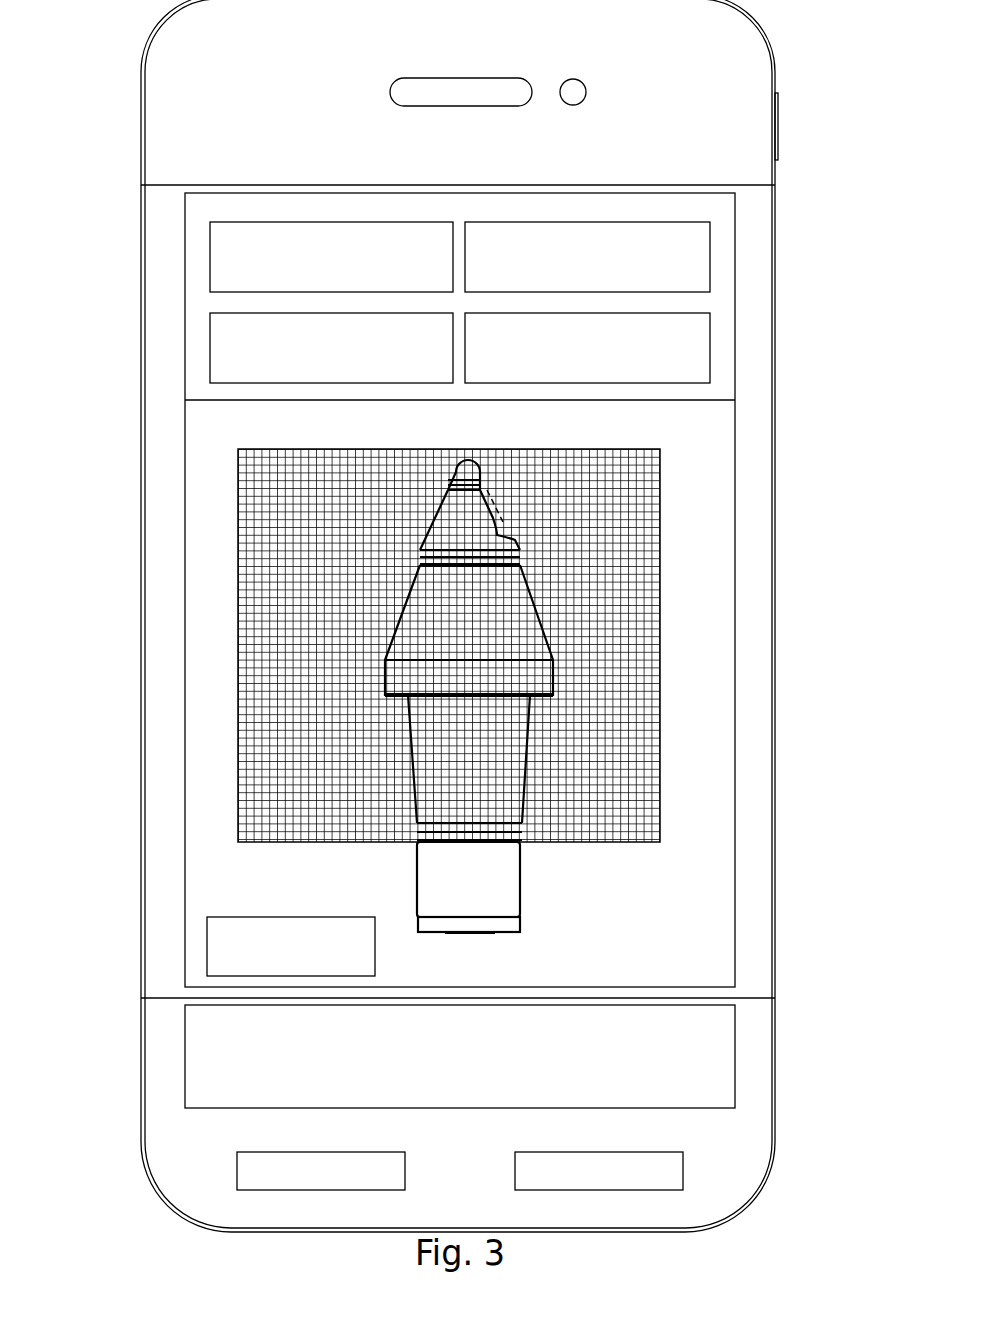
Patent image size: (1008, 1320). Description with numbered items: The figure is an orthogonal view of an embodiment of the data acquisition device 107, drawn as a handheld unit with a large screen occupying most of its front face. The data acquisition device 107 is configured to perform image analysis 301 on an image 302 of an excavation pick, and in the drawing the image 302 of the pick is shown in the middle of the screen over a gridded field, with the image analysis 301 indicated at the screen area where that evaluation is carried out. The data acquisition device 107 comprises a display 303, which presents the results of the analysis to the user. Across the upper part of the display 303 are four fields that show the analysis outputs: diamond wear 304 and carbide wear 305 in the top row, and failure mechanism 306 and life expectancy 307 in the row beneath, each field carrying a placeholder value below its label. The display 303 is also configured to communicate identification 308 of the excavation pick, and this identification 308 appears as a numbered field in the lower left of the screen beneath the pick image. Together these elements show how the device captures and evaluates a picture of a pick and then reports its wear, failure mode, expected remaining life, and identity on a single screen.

The data acquisition device 107 is at (187, 60).
The image analysis 301 is at (547, 590).
The image 302 is at (430, 607).
The display 303 is at (707, 545).
The diamond wear 304 is at (228, 263).
The carbide wear 305 is at (705, 240).
The failure mechanism 306 is at (228, 367).
The life expectancy 307 is at (705, 340).
The identification 308 is at (207, 950).